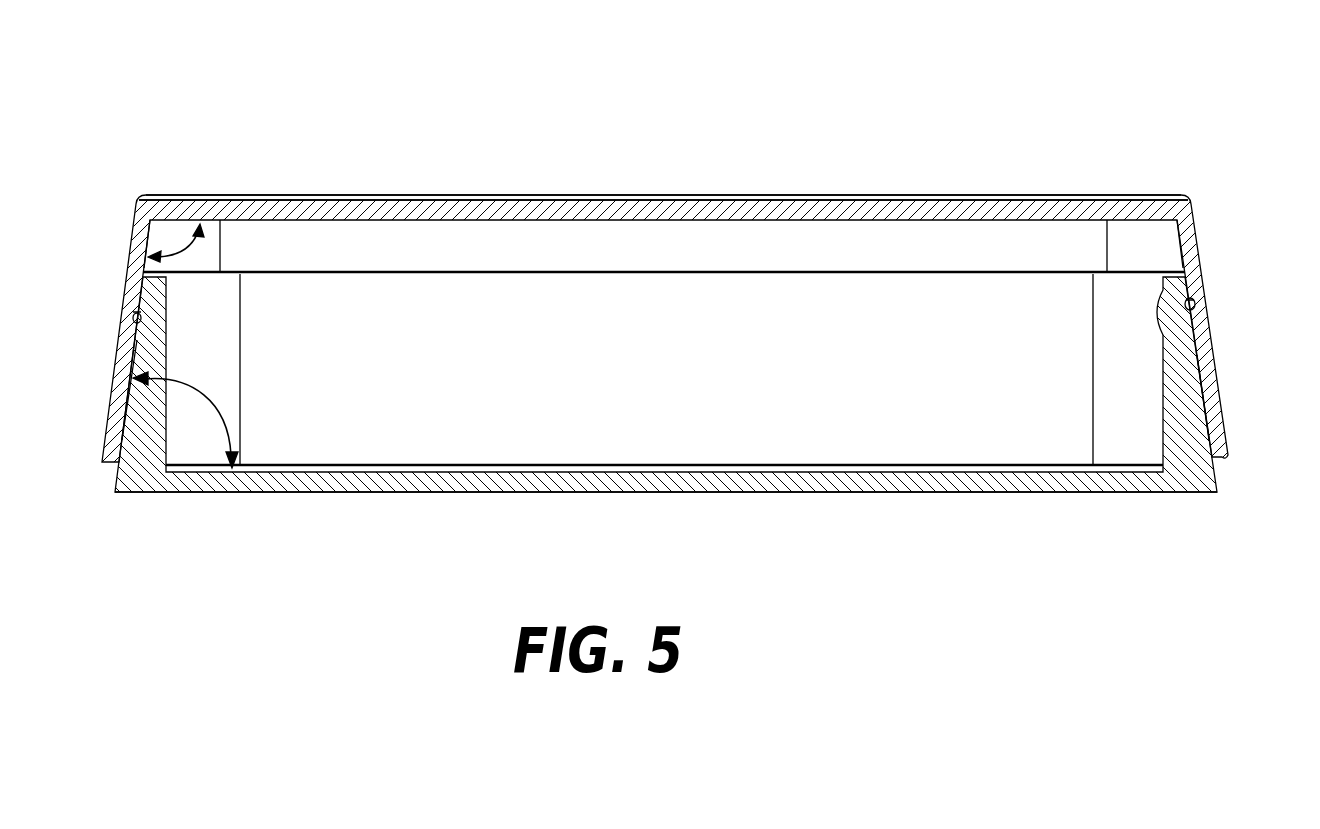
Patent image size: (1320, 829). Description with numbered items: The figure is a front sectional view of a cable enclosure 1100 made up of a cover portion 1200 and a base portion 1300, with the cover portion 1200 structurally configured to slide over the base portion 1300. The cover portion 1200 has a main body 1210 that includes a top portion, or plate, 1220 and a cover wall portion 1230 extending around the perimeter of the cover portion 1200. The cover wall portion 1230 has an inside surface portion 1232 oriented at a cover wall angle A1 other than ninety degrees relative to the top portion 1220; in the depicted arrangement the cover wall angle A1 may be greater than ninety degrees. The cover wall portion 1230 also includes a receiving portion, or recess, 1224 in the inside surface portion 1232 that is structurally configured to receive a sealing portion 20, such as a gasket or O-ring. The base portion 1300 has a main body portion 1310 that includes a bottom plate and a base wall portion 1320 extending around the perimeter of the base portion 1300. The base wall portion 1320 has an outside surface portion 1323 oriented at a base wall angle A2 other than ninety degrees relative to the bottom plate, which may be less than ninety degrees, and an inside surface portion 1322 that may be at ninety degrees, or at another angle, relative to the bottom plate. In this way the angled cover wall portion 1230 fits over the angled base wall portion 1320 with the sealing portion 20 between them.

The enclosure 1100 is at (835, 100).
The cover portion 1200 is at (400, 218).
The main body 1210 is at (741, 198).
The top portion 1220 is at (909, 212).
The cover wall portion 1230 is at (1193, 260).
The inside surface portion 1232 is at (152, 241).
The receiving portion 1224 is at (138, 320).
The sealing portion 20 is at (136, 312).
The outside surface portion 1323 is at (130, 401).
The inside surface portion 1322 is at (1168, 390).
The base wall portion 1320 is at (1183, 423).
The base portion 1300 is at (1203, 479).
The main body portion 1310 is at (1134, 486).
The cover wall angle A1 is at (165, 253).
The base wall angle A2 is at (220, 418).